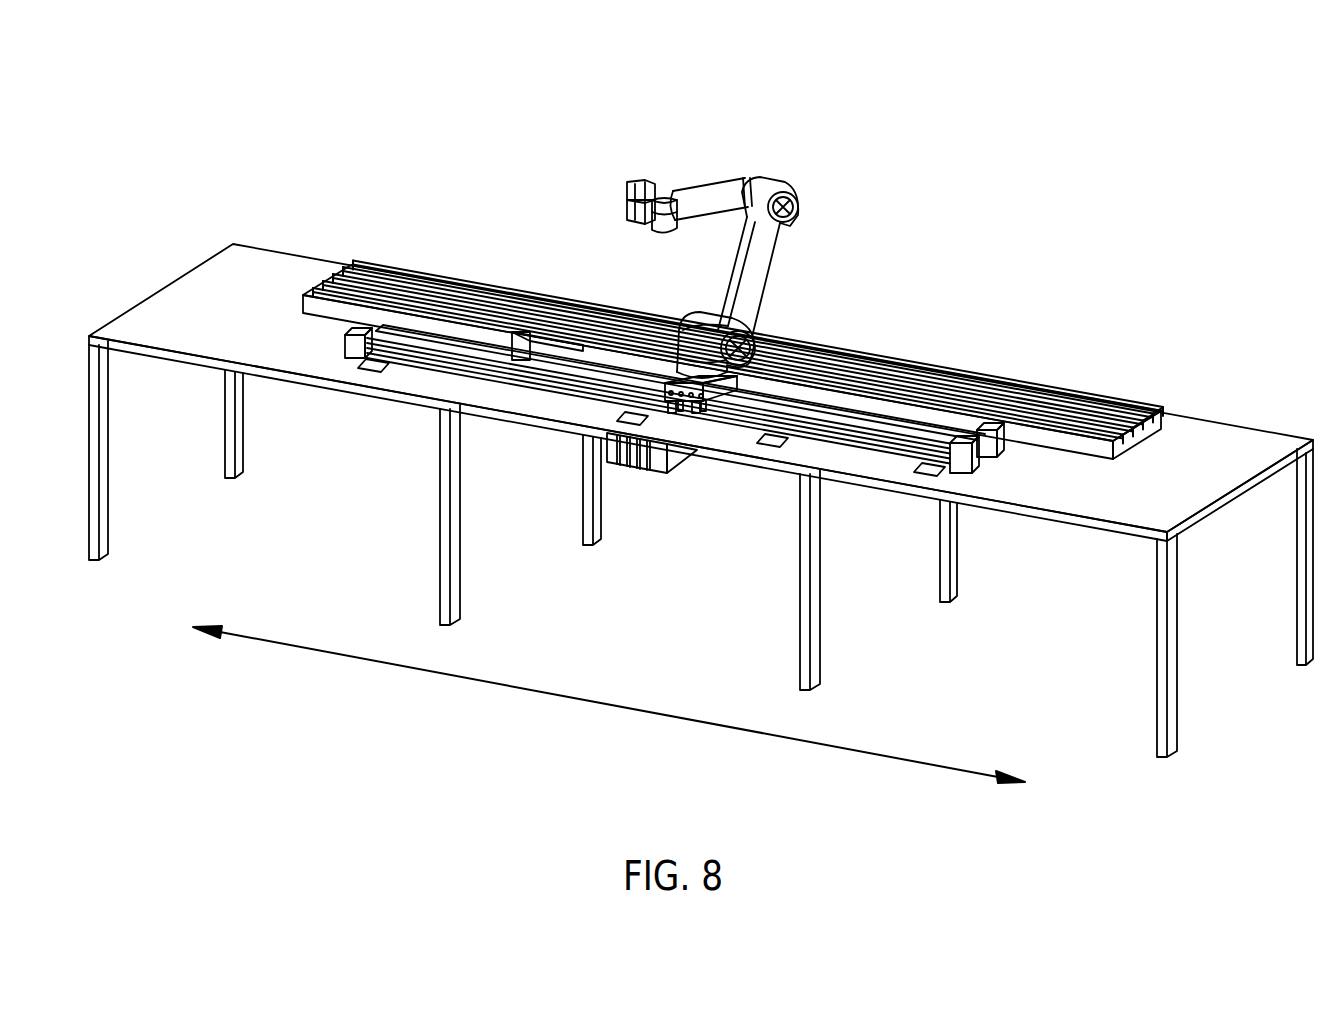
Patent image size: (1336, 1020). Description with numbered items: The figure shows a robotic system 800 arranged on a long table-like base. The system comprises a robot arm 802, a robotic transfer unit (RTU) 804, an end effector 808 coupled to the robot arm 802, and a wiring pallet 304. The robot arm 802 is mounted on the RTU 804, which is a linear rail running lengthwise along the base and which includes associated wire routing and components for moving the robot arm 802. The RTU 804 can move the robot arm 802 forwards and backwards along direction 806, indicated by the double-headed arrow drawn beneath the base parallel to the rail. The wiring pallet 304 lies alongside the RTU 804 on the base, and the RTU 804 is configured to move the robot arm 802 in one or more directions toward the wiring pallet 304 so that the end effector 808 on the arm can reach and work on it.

The robotic system 800 is at (218, 72).
The wiring pallet 304 is at (432, 275).
The robot arm 802 is at (786, 183).
The robotic transfer unit (RTU) 804 is at (410, 372).
The direction 806 is at (493, 686).
The end effector 808 is at (670, 178).